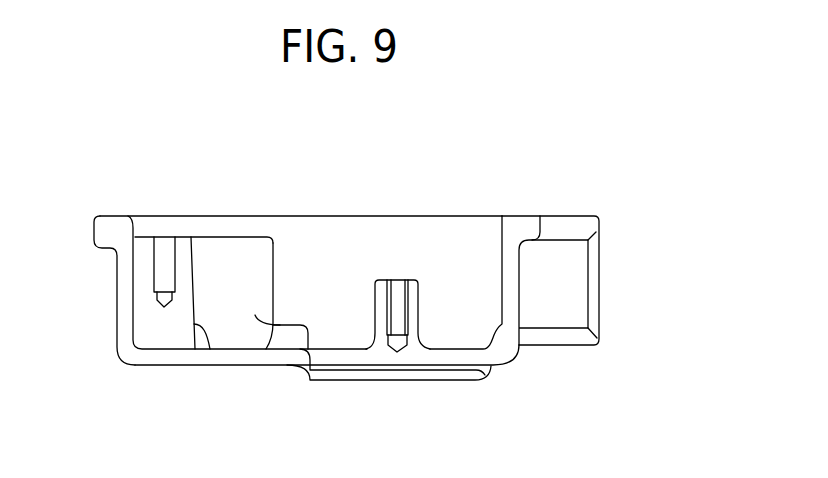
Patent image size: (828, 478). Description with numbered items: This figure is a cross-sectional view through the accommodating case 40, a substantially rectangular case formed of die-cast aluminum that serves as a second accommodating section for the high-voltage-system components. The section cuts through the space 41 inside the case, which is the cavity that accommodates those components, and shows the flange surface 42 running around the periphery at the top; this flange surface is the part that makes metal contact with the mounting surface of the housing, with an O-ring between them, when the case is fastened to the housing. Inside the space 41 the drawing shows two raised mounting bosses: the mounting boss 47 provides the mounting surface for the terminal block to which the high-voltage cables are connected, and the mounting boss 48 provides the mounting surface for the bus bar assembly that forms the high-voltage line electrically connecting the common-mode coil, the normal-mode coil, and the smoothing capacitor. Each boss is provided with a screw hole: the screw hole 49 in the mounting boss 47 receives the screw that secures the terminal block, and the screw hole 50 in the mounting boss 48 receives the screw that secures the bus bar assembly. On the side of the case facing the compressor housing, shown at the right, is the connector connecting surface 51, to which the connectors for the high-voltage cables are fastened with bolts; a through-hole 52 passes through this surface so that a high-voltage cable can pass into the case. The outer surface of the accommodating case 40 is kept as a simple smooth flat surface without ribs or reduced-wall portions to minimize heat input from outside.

The accommodating case 40 is at (231, 383).
The space 41 is at (334, 240).
The flange surface 42 is at (113, 217).
The mounting boss 47 is at (415, 310).
The mounting boss 48 is at (183, 237).
The screw hole 49 is at (398, 297).
The screw hole 50 is at (162, 238).
The connector connecting surface 51 is at (585, 227).
The through-hole 52 is at (563, 290).